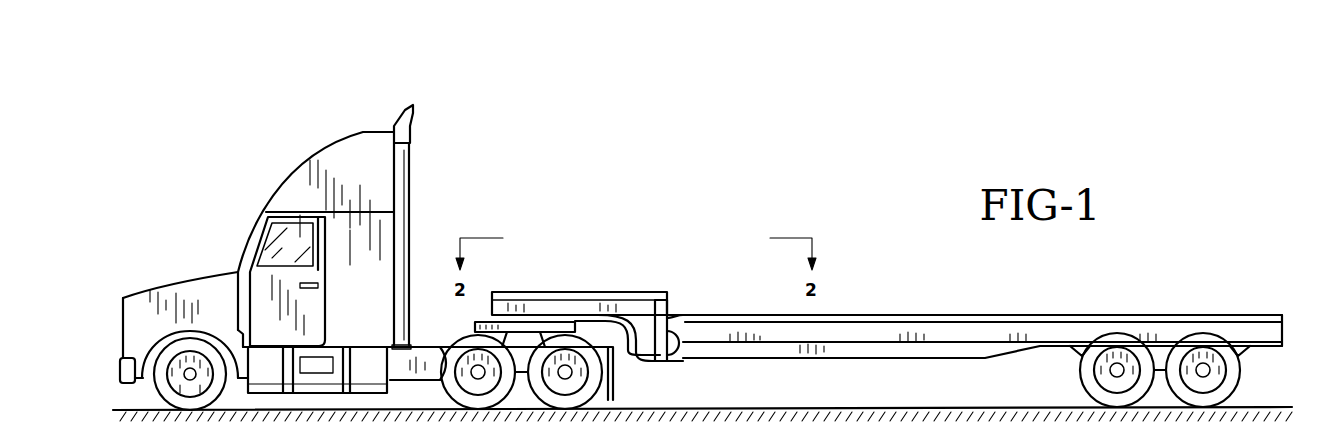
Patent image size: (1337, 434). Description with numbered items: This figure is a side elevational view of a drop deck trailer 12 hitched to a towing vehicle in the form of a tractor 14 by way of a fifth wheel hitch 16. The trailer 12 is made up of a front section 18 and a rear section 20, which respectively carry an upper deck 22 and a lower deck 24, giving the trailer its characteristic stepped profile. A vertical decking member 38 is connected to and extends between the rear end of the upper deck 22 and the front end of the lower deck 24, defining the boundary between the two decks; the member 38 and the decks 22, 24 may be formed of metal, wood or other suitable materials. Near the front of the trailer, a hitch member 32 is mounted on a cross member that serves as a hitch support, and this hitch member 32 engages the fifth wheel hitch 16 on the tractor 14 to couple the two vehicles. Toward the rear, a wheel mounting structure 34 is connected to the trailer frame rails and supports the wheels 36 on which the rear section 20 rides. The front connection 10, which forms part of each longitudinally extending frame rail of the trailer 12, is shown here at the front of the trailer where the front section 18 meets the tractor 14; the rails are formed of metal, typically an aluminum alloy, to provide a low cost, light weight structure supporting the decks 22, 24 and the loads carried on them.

The front connection 10 is at (679, 296).
The drop deck trailer 12 is at (983, 311).
The tractor 14 is at (207, 284).
The fifth wheel hitch 16 is at (556, 320).
The front section 18 is at (629, 300).
The rear section 20 is at (881, 328).
The upper deck 22 is at (589, 292).
The lower deck 24 is at (940, 317).
The hitch member 32 is at (522, 322).
The wheel mounting structure 34 is at (1156, 345).
The wheels 36 is at (1110, 340).
The vertical decking member 38 is at (670, 307).